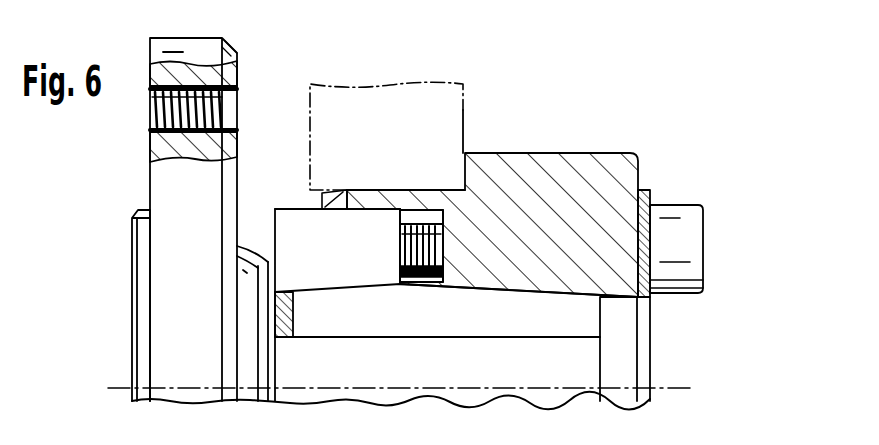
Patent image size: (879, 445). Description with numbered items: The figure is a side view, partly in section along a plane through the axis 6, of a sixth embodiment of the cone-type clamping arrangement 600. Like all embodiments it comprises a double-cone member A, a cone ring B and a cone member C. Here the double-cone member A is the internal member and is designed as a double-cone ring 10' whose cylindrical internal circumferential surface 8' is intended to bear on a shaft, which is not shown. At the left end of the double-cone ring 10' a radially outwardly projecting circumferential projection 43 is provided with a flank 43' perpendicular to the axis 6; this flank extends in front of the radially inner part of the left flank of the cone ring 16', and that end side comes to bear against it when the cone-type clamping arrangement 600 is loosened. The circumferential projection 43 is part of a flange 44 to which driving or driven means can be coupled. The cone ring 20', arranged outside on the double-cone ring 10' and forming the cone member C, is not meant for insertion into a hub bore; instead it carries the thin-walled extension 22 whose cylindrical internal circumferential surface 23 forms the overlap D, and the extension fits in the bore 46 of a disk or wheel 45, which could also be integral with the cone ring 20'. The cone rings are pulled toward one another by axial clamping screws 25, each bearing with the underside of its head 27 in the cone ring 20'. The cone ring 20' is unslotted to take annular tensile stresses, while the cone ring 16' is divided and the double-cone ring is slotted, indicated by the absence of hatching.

The axis 6 is at (691, 388).
The cylindrical internal circumferential surface 8' is at (456, 334).
The double-cone ring 10' is at (462, 346).
The cone ring 16' is at (331, 195).
The cone ring 20' is at (492, 204).
The thin-walled extension 22 is at (366, 210).
The cylindrical internal circumferential surface 23 is at (398, 210).
The clamping screw 25 is at (443, 237).
The head 27 is at (683, 272).
The circumferential projection 43 is at (223, 305).
The flank 43' is at (252, 231).
The flange 44 is at (160, 173).
The disk or wheel 45 is at (466, 108).
The bore 46 is at (330, 197).
The cone-type clamping arrangement 600 is at (727, 150).
The double-cone member A is at (337, 345).
The cone ring B is at (283, 194).
The cone member C is at (650, 160).
The overlap D is at (402, 185).